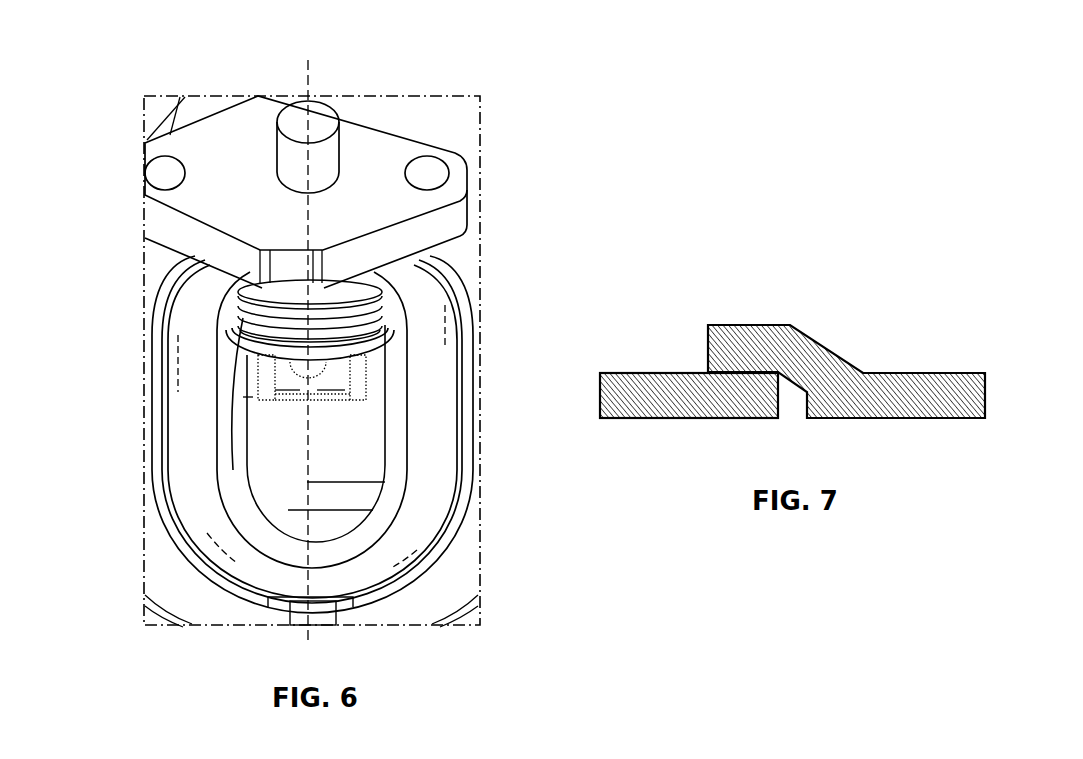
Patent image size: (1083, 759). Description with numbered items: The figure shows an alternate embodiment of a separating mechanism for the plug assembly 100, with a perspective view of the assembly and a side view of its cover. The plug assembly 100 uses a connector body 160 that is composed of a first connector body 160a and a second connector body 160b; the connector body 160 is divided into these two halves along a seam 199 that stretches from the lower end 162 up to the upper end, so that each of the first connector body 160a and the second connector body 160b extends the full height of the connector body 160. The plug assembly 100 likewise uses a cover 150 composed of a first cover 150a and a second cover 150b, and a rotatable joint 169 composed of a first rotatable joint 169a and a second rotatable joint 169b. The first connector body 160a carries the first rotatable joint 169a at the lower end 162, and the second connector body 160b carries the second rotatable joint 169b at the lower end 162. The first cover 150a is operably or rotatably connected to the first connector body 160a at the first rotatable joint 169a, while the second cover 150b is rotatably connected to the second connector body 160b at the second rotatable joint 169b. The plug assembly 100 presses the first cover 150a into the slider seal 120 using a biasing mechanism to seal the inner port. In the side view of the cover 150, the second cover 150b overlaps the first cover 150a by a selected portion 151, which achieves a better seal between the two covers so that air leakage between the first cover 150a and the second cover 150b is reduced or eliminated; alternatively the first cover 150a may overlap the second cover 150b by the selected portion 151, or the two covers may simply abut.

In FIG. 6, the plug assembly 100 is at (153, 46).
In FIG. 6, the seam 199 is at (307, 97).
In FIG. 6, the connector body 160 is at (325, 100).
In FIG. 6, the first connector body 160a is at (277, 347).
In FIG. 6, the second connector body 160b is at (352, 325).
In FIG. 6, the lower end 162 is at (333, 375).
In FIG. 6, the rotatable joint 169 is at (290, 375).
In FIG. 6, the first rotatable joint 169a is at (293, 392).
In FIG. 6, the second rotatable joint 169b is at (323, 392).
In FIG. 6, the cover 150 is at (360, 423).
In FIG. 7, the cover 150 is at (825, 378).
In FIG. 6, the first cover 150a is at (267, 475).
In FIG. 7, the first cover 150a is at (607, 405).
In FIG. 6, the second cover 150b is at (340, 522).
In FIG. 7, the second cover 150b is at (923, 392).
In FIG. 7, the selected portion 151 is at (708, 322).
In FIG. 6, the slider seal 120 is at (393, 494).